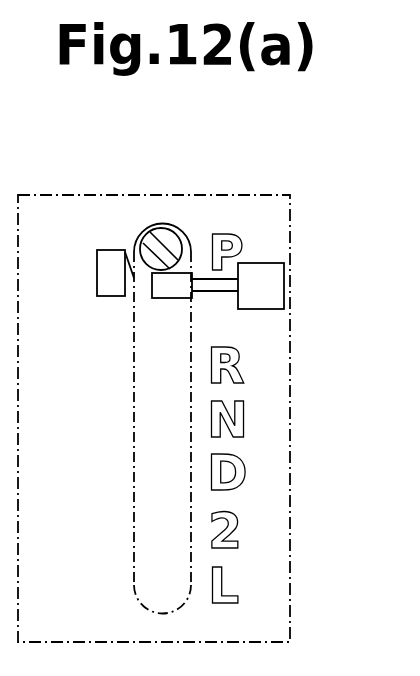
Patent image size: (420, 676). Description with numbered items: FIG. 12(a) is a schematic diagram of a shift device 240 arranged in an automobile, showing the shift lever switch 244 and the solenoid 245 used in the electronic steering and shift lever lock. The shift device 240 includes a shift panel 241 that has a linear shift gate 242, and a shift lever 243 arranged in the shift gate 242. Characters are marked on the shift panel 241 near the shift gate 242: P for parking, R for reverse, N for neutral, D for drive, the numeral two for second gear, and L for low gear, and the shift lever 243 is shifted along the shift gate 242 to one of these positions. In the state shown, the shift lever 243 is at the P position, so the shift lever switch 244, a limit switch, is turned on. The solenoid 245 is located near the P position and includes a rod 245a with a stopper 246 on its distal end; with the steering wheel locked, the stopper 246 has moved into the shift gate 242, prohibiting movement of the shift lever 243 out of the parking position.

The shift device 240 is at (292, 184).
The shift panel 241 is at (291, 484).
The shift gate 242 is at (134, 442).
The shift lever 243 is at (161, 230).
The shift lever switch 244 is at (97, 272).
The solenoid 245 is at (284, 287).
The rod 245a is at (217, 293).
The stopper 246 is at (166, 299).